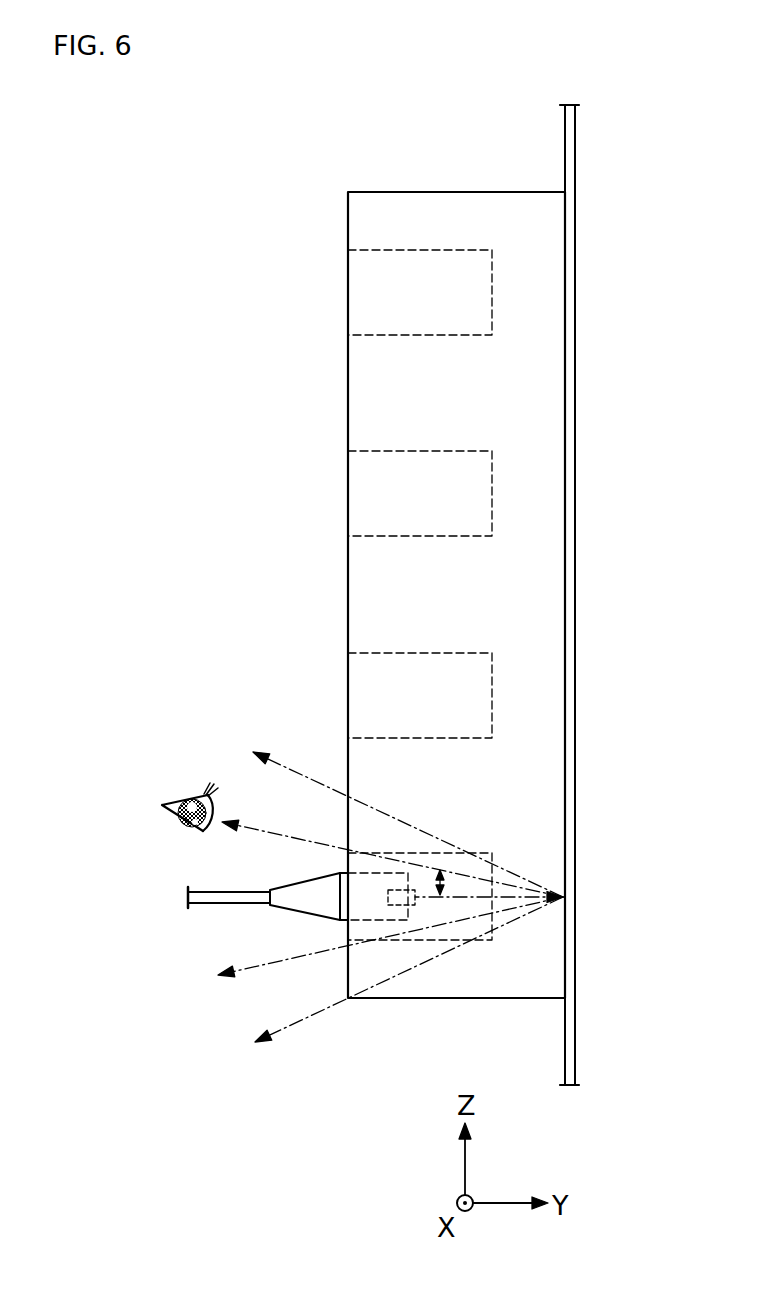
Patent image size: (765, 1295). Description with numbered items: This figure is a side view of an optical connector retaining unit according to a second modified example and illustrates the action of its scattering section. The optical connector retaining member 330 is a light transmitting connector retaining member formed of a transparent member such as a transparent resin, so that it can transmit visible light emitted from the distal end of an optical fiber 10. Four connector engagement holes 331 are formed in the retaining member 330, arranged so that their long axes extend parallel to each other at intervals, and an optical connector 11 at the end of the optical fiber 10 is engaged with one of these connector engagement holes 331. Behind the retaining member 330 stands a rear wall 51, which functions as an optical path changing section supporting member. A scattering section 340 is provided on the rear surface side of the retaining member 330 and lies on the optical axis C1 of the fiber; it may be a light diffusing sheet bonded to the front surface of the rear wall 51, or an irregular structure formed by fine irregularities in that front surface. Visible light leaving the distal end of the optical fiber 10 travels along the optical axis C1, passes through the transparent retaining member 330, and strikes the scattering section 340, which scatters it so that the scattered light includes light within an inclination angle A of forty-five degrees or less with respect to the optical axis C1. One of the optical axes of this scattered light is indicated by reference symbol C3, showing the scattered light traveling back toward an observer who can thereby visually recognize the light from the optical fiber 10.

The optical connector retaining member 330 is at (492, 172).
The connector engagement hole 331 is at (385, 250).
The rear wall 51 is at (576, 138).
The optical fiber 10 is at (203, 905).
The optical connector 11 is at (343, 920).
The scattering section 340 is at (562, 890).
The inclination angle A is at (347, 873).
The optical axis C1 is at (463, 900).
The optical axis of scattered light C3 is at (260, 826).